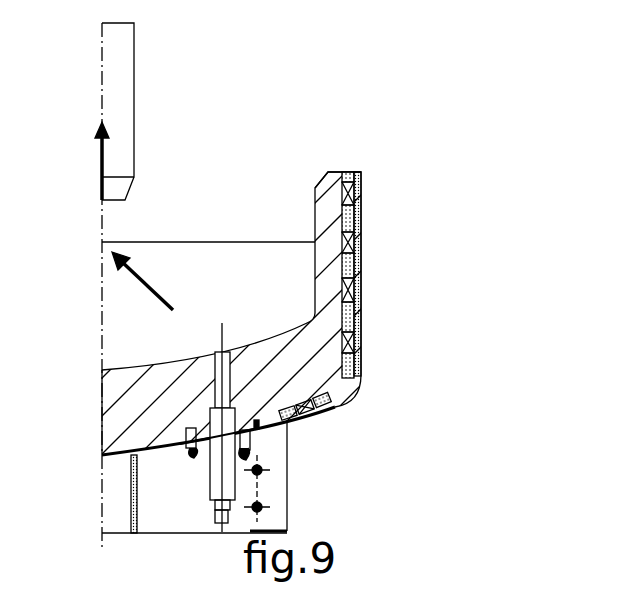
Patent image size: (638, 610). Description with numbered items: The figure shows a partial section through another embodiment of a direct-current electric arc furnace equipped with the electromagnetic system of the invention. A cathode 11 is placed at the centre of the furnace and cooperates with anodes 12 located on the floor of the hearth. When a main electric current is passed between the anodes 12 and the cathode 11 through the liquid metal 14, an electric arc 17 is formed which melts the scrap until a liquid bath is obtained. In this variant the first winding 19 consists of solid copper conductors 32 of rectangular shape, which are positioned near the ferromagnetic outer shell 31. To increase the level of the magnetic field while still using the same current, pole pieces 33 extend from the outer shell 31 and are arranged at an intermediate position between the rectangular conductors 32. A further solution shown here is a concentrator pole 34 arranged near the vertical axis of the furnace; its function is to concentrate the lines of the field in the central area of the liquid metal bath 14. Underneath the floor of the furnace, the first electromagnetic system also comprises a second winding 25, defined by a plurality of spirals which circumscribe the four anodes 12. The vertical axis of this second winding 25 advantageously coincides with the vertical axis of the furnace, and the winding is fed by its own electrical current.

The cathode 11 is at (118, 60).
The anodes 12 is at (217, 462).
The liquid metal 14 is at (203, 288).
The electric arc 17 is at (141, 250).
The first winding 19 is at (349, 160).
The second winding 25 is at (262, 508).
The ferromagnetic outer shell 31 is at (361, 312).
The copper conductors 32 is at (354, 193).
The pole pieces 33 is at (348, 265).
The concentrator pole 34 is at (138, 500).